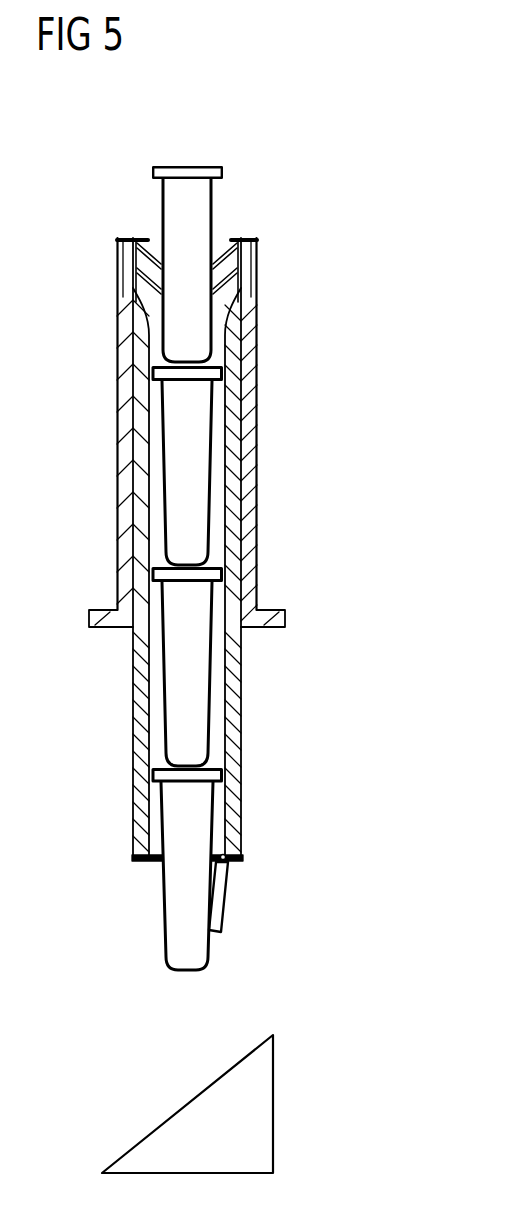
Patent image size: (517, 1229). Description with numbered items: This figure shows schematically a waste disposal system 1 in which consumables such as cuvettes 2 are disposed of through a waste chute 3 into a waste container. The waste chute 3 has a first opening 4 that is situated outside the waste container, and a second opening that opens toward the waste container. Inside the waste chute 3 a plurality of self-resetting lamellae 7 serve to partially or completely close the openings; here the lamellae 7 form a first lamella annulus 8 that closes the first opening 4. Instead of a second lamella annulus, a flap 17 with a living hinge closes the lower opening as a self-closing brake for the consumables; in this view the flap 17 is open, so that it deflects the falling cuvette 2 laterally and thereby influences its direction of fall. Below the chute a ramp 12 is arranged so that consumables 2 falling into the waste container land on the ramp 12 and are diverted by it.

The waste disposal system 1 is at (116, 168).
The cuvette 2 is at (198, 356).
The waste chute 3 is at (138, 382).
The first opening 4 is at (229, 214).
The self-resetting lamellae 7 is at (136, 272).
The first lamella annulus 8 is at (257, 240).
The ramp 12 is at (273, 1113).
The flap 17 is at (228, 895).